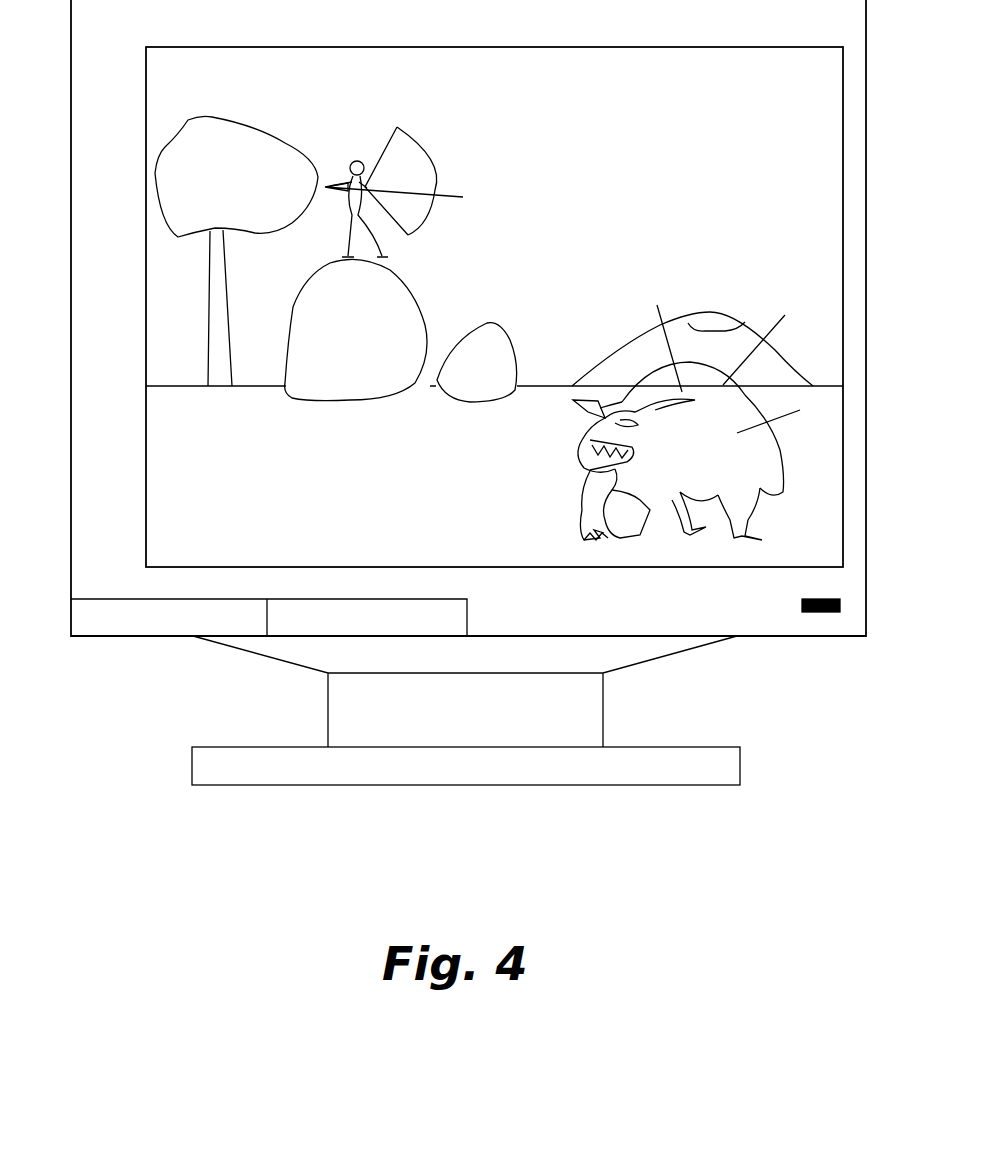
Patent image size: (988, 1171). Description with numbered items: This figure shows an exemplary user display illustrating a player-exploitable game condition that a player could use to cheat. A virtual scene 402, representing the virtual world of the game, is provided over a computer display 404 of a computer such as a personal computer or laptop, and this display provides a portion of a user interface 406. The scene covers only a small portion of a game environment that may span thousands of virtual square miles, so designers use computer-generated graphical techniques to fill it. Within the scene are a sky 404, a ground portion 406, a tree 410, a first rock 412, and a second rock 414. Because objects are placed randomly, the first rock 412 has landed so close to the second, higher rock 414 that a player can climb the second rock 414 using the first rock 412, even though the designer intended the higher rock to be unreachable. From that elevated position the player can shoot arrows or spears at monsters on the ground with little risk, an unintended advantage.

The virtual scene 402 is at (672, 88).
The computer display 404 is at (715, 160).
The ground portion 406 is at (325, 472).
The tree 410 is at (222, 128).
The first rock 412 is at (493, 332).
The second rock 414 is at (405, 299).